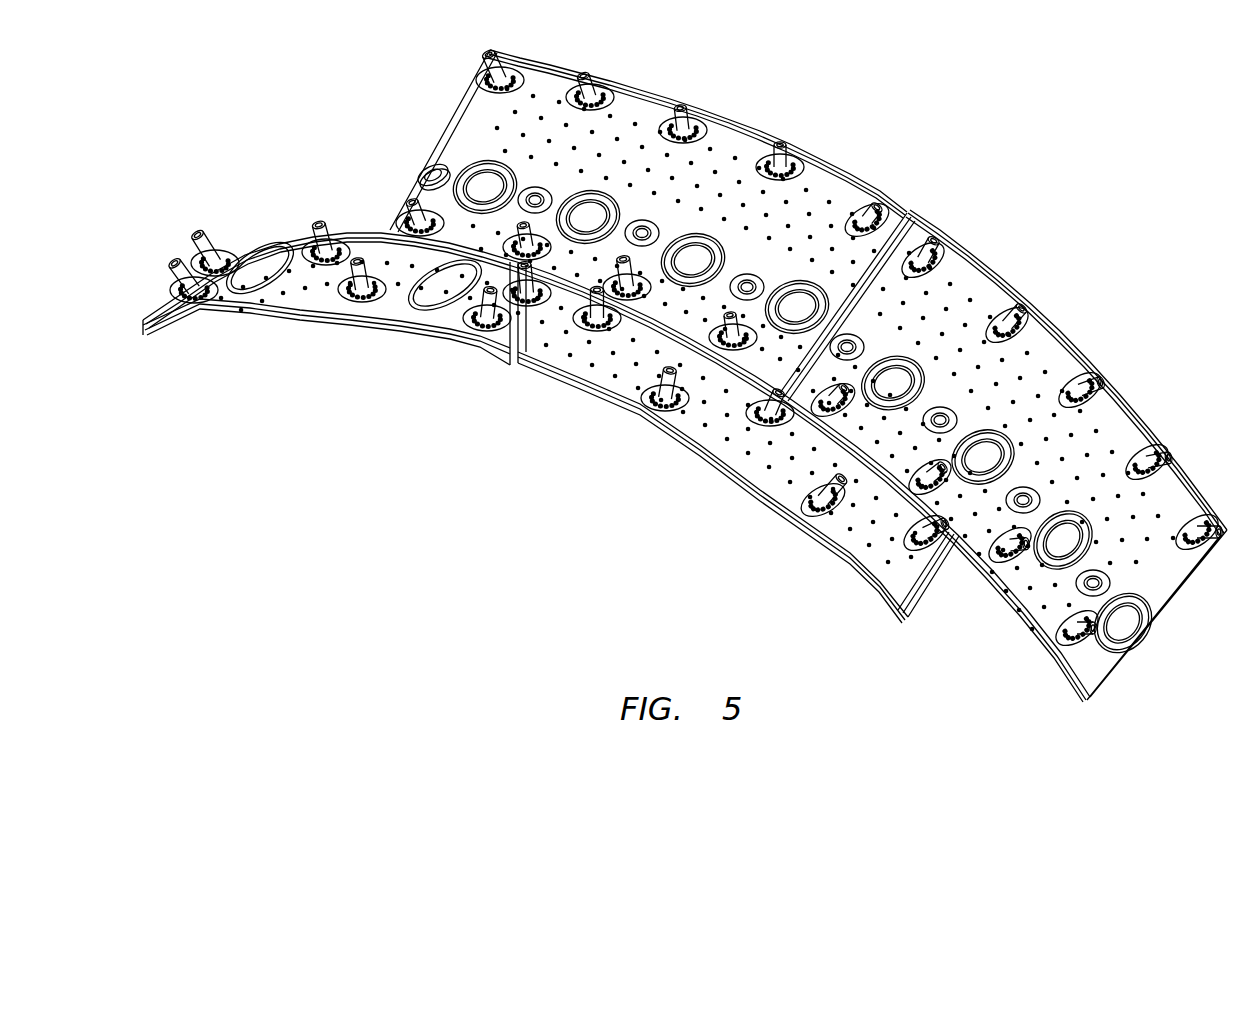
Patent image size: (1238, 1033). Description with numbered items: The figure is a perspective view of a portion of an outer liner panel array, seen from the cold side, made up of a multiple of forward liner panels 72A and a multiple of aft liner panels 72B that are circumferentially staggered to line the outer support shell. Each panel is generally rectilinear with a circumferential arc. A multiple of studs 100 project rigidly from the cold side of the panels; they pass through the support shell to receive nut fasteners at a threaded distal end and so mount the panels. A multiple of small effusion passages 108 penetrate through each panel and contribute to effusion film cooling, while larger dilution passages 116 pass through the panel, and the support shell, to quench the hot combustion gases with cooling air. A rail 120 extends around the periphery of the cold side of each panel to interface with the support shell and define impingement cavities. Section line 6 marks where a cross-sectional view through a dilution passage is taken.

The forward liner panel 72A is at (868, 612).
The aft liner panel 72B is at (1177, 630).
The stud 100 is at (781, 143).
The effusion passage 108 is at (1033, 338).
The dilution passage 116 is at (986, 457).
The rail 120 is at (1086, 699).
The section line 6- 6 is at (965, 588).